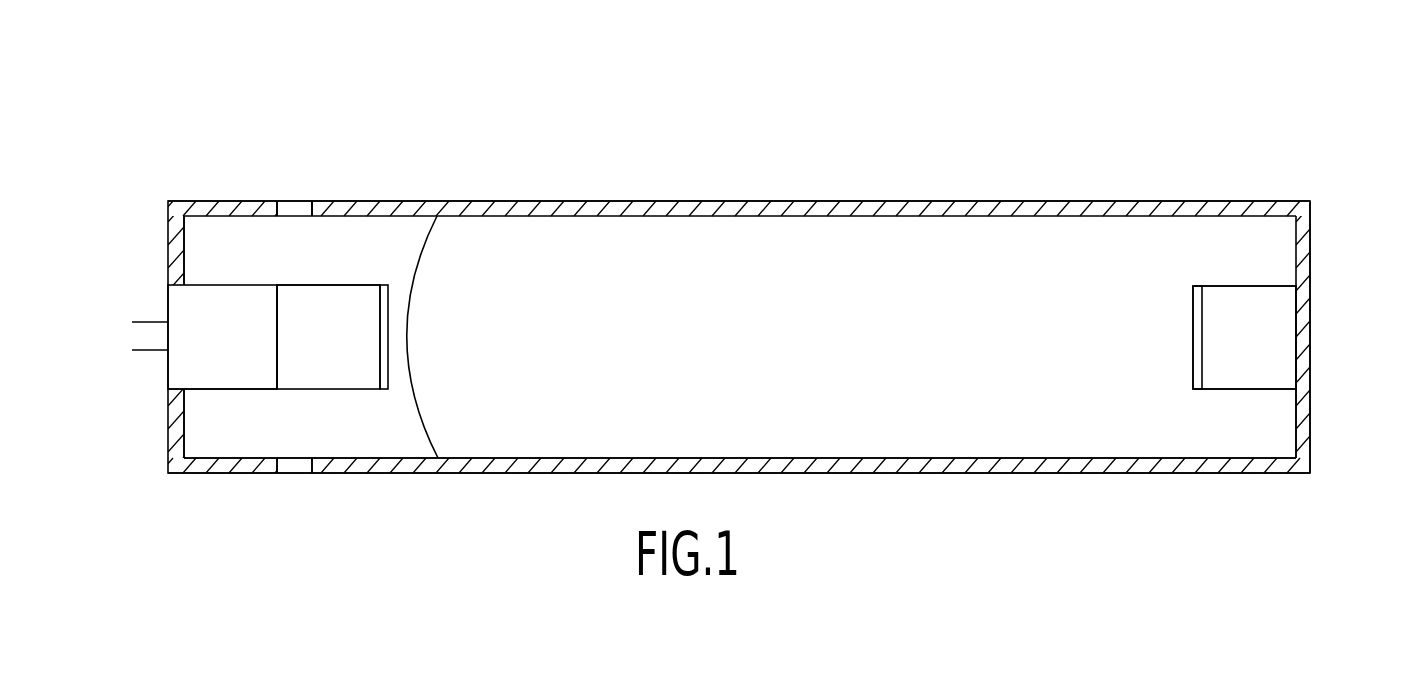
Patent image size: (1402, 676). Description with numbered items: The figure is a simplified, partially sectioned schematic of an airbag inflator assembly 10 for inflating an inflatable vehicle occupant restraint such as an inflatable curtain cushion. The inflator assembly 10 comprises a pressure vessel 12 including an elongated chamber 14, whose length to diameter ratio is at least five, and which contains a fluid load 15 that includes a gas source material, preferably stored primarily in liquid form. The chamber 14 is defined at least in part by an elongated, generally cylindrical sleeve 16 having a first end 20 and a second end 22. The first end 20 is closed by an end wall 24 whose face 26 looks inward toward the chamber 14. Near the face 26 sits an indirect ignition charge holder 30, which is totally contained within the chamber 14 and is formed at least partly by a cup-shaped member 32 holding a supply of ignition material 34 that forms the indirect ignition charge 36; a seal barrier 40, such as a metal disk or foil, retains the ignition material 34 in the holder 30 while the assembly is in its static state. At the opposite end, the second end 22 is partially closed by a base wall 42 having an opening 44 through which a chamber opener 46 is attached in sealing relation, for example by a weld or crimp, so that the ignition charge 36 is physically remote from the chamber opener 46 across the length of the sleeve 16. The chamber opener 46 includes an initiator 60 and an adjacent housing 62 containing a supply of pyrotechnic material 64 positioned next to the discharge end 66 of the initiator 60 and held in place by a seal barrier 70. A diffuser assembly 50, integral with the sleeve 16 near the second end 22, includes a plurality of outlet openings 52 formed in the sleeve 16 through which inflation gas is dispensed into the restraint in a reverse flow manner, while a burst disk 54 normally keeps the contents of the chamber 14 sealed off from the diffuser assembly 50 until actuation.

The airbag inflator assembly 10 is at (872, 133).
The pressure vessel 12 is at (640, 205).
The chamber 14 is at (833, 432).
The fluid load 15 is at (972, 423).
The sleeve 16 is at (937, 203).
The first end 20 is at (1288, 177).
The second end 22 is at (188, 160).
The end wall 24 is at (1311, 418).
The face 26 is at (1295, 418).
The indirect ignition charge holder 30 is at (1232, 282).
The cup-shaped member 32 is at (1218, 390).
The ignition material 34 is at (1267, 318).
The ignition charge 36 is at (1273, 358).
The seal barrier 40 is at (1193, 338).
The base wall 42 is at (177, 243).
The opening 44 is at (178, 389).
The chamber opener 46 is at (268, 392).
The diffuser assembly 50 is at (355, 197).
The outlet openings 52 is at (293, 207).
The burst disk 54 is at (408, 330).
The initiator 60 is at (230, 351).
The housing 62 is at (347, 390).
The pyrotechnic material 64 is at (392, 300).
The discharge end 66 is at (273, 335).
The seal barrier 70 is at (338, 330).